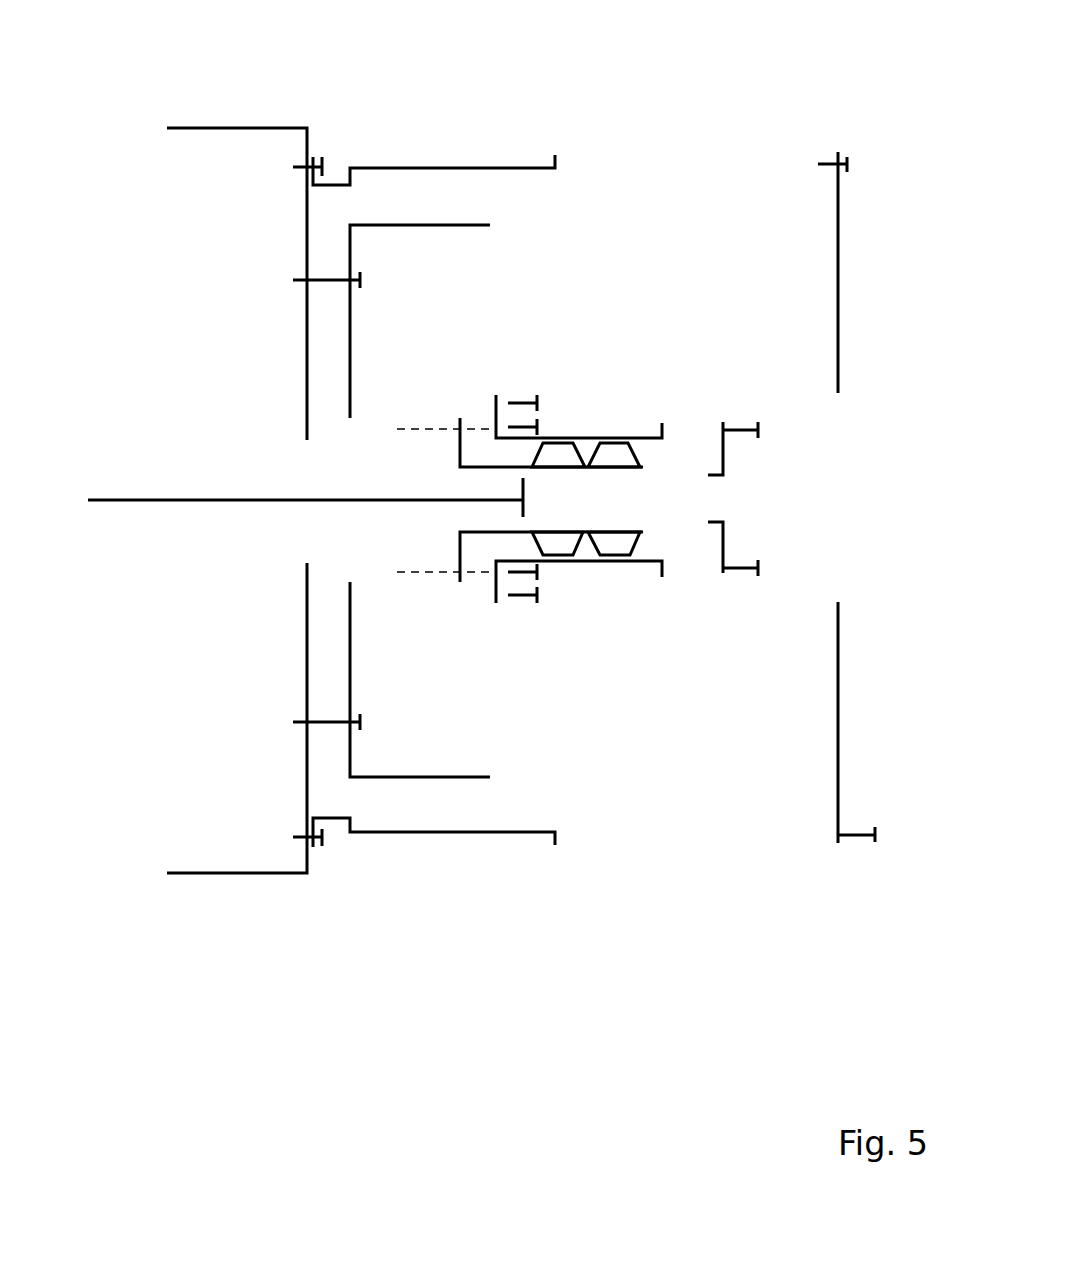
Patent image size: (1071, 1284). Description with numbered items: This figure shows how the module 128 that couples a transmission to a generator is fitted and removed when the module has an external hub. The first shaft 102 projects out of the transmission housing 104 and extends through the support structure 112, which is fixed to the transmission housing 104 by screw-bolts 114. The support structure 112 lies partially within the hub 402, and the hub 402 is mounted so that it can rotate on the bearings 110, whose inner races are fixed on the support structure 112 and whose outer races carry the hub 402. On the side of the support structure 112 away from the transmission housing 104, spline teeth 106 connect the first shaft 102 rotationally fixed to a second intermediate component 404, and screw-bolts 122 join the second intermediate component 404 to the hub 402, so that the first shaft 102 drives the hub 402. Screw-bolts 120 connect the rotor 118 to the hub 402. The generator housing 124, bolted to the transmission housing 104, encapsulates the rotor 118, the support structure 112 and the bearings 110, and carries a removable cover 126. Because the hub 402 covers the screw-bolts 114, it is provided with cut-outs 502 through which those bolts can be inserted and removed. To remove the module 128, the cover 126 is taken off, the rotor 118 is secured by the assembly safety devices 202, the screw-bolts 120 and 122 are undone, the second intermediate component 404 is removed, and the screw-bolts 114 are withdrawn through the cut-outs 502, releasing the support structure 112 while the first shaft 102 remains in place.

The first shaft 102 is at (227, 500).
The transmission housing 104 is at (200, 128).
The spline teeth 106 is at (523, 512).
The bearings 110 is at (615, 457).
The support structure 112 is at (483, 532).
The screw-bolts 114 is at (538, 566).
The rotor 118 is at (472, 225).
The screw-bolts 120 is at (537, 398).
The screw-bolts 122 is at (760, 433).
The generator housing 124 is at (450, 168).
The cover 126 is at (838, 722).
The module 128 is at (623, 577).
The assembly safety devices 202 is at (327, 278).
The hub 402 is at (593, 437).
The second intermediate component 404 is at (723, 448).
The cut-outs 502 is at (495, 572).